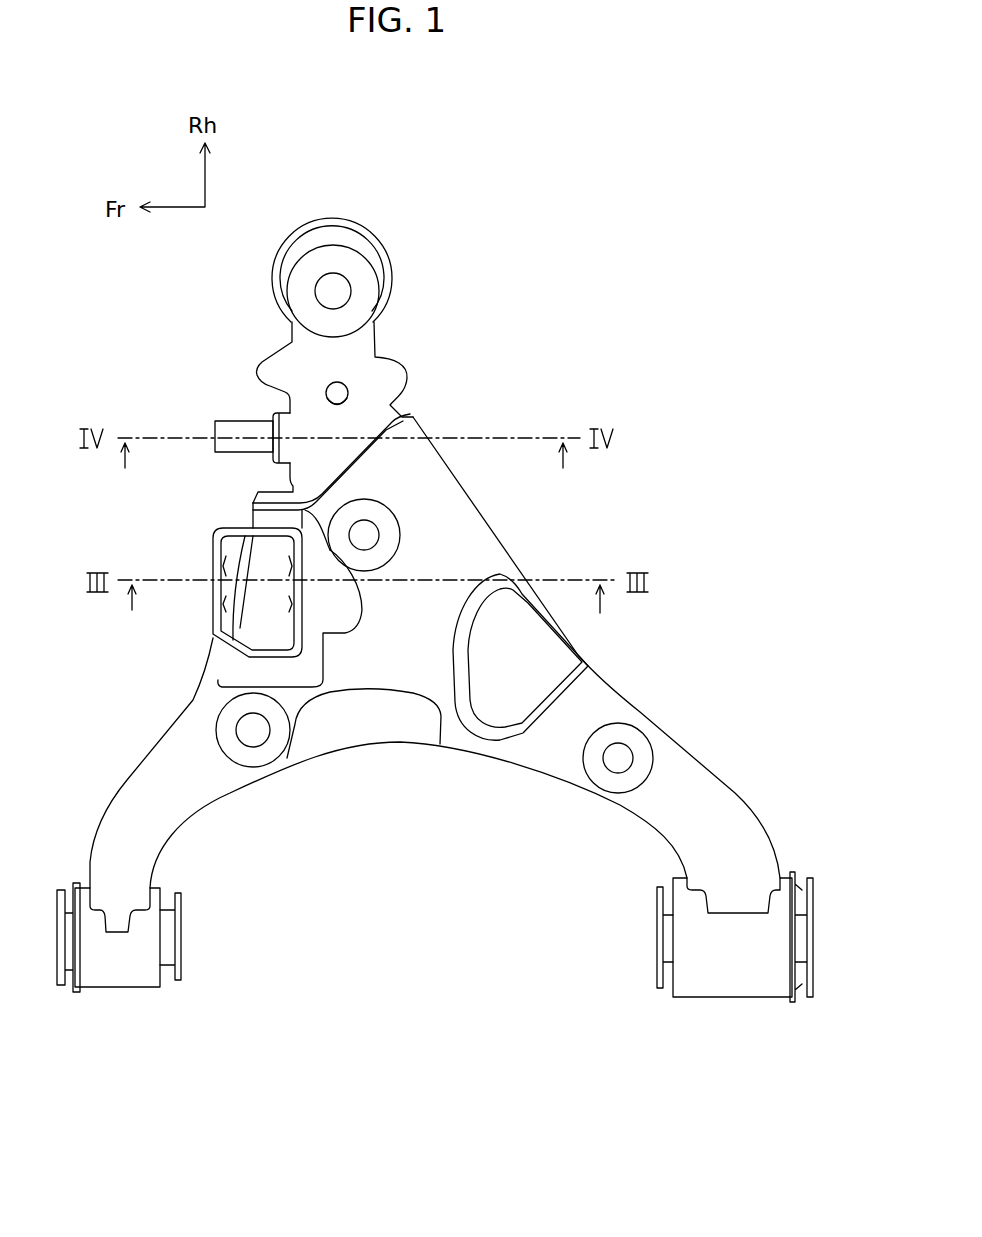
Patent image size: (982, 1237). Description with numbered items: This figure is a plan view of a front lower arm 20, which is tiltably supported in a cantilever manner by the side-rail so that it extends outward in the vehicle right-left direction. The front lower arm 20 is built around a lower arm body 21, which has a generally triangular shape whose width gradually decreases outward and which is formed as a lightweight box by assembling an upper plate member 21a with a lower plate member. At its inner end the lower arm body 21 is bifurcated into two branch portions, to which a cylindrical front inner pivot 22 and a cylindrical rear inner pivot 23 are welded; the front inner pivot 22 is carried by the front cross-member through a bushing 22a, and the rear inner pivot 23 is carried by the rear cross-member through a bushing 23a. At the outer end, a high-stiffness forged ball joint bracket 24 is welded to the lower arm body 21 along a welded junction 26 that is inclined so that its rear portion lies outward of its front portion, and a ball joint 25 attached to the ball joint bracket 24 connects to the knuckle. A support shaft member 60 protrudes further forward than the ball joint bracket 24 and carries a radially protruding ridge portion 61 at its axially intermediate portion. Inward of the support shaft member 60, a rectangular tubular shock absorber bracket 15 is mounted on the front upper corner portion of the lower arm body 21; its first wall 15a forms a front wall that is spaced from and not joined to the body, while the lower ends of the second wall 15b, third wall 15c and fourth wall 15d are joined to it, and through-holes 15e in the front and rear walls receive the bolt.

The shock absorber bracket 15 is at (213, 640).
The first wall 15a is at (213, 545).
The second wall 15b is at (305, 542).
The third wall 15c is at (237, 528).
The fourth wall 15d is at (259, 658).
The through-holes 15e is at (207, 622).
The front lower arm 20 is at (495, 404).
The lower arm body 21 is at (578, 638).
The upper plate member 21a is at (547, 752).
The front inner pivot 22 is at (138, 975).
The bushing 22a is at (170, 935).
The rear inner pivot 23 is at (727, 980).
The bushing 23a is at (665, 942).
The ball joint bracket 24 is at (389, 340).
The ball joint 25 is at (353, 240).
The welded junction 26 is at (414, 419).
The support shaft member 60 is at (224, 408).
The ridge portion 61 is at (273, 420).